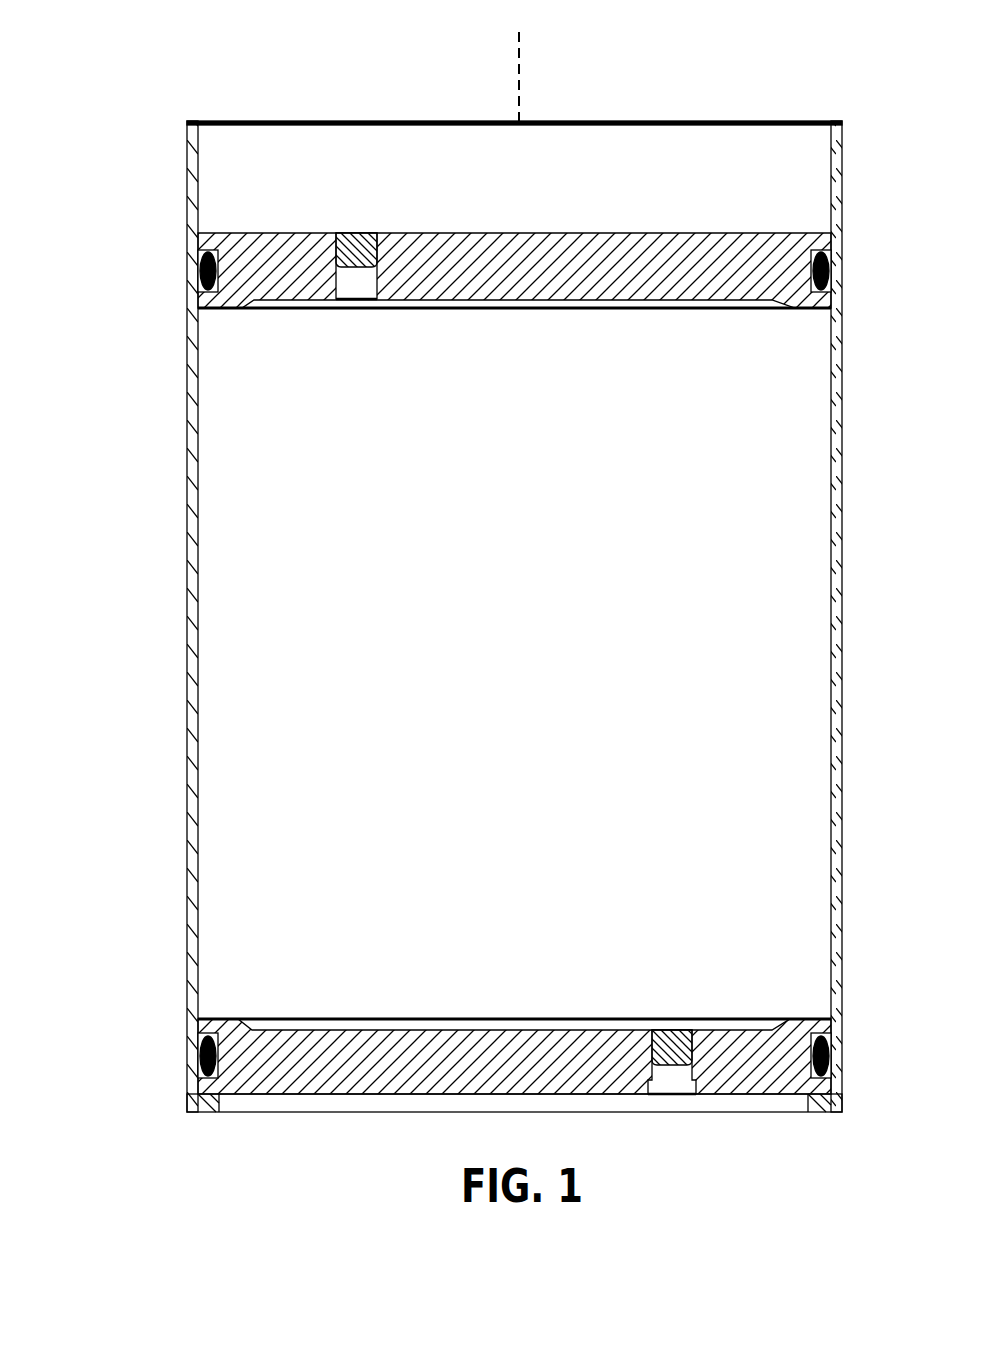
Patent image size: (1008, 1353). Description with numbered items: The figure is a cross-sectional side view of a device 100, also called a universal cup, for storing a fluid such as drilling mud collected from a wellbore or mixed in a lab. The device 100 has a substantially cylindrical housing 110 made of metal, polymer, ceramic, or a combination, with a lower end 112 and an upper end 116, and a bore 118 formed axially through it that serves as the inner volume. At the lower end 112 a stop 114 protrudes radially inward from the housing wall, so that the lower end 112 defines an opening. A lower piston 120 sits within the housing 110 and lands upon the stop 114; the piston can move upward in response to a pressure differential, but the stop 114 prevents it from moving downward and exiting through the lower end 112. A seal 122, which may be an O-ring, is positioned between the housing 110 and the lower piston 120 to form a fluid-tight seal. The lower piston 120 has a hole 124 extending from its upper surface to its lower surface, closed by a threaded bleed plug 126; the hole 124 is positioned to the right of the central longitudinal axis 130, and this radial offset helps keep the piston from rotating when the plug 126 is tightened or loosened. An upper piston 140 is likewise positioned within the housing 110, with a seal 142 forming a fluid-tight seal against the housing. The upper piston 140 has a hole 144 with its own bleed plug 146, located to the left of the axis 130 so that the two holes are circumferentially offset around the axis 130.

The device 100 is at (172, 60).
The housing 110 is at (187, 620).
The lower end 112 is at (465, 1142).
The stop 114 is at (210, 1112).
The upper end 116 is at (187, 124).
The bore 118 is at (528, 586).
The lower piston 120 is at (480, 1015).
The seal 122 is at (198, 1050).
The hole 124 is at (721, 1017).
The plug 126 is at (675, 996).
The central longitudinal axis 130 is at (520, 70).
The upper piston 140 is at (456, 231).
The seal 142 is at (198, 262).
The hole 144 is at (408, 230).
The plug 146 is at (362, 220).